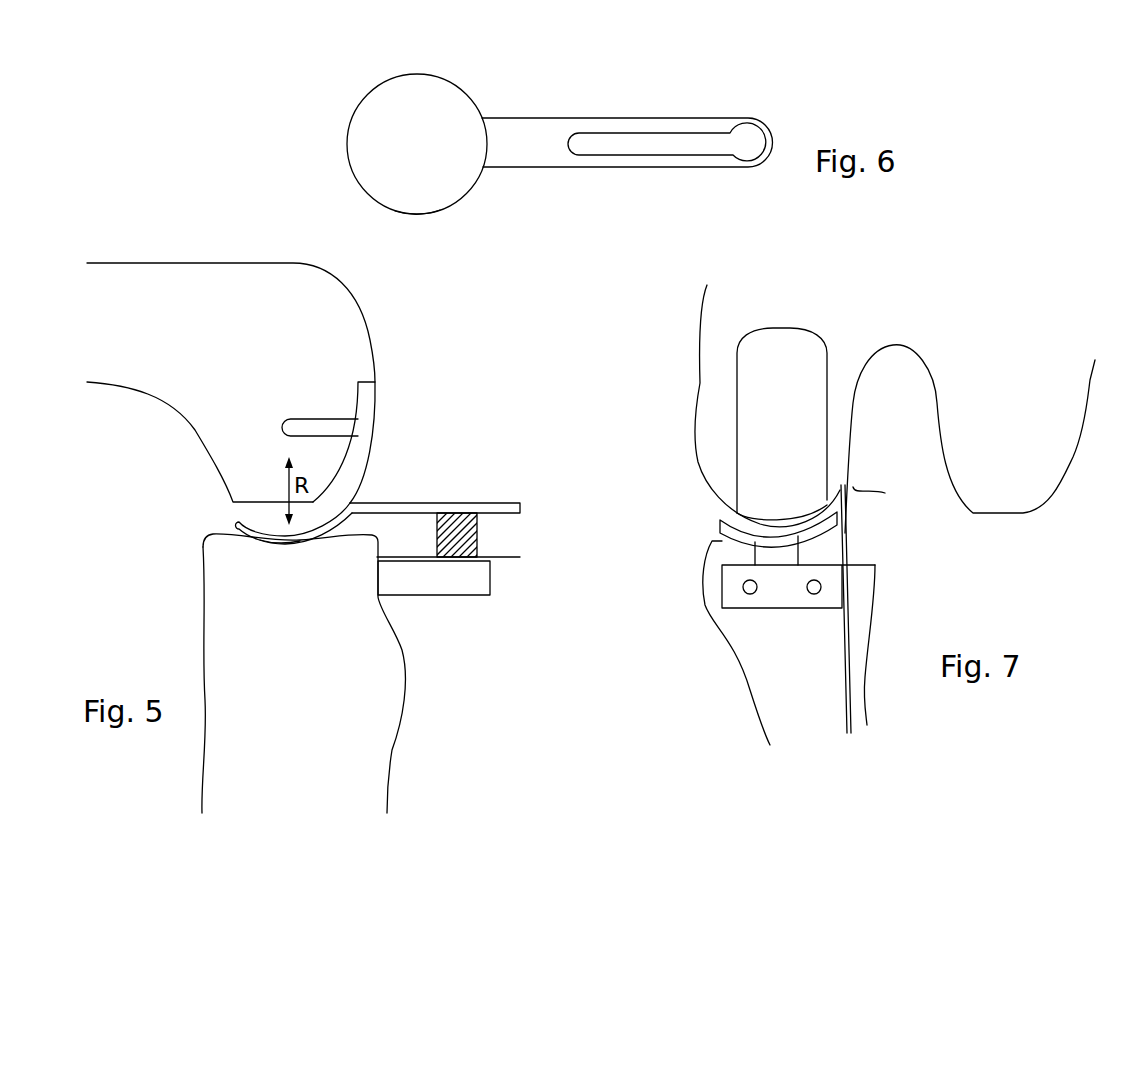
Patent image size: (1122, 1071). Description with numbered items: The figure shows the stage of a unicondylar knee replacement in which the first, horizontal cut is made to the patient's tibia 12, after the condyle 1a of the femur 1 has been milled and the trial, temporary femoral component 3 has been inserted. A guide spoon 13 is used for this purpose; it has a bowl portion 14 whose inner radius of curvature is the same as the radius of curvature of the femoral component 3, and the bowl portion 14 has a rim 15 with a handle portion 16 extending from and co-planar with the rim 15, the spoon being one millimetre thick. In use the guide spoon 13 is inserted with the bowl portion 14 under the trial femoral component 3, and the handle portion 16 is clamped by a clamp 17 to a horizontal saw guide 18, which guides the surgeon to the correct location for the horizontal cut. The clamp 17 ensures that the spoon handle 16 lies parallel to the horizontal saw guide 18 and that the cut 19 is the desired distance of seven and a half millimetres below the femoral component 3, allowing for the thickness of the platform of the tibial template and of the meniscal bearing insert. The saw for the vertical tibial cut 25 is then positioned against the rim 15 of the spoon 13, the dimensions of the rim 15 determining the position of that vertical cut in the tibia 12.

In FIG. 5, the femur 1 is at (245, 263).
In FIG. 7, the femur 1 is at (700, 365).
In FIG. 7, the condyle 1a is at (840, 417).
In FIG. 5, the femoral component 3 is at (378, 405).
In FIG. 5, the tibia 12 is at (390, 763).
In FIG. 7, the tibia 12 is at (760, 705).
In FIG. 6, the guide spoon 13 is at (535, 168).
In FIG. 5, the guide spoon 13 is at (455, 502).
In FIG. 7, the guide spoon 13 is at (720, 528).
In FIG. 6, the bowl portion 14 is at (448, 206).
In FIG. 5, the bowl portion 14 is at (291, 545).
In FIG. 6, the rim 15 is at (462, 88).
In FIG. 5, the rim 15 is at (348, 503).
In FIG. 6, the handle portion 16 is at (678, 169).
In FIG. 5, the clamp 17 is at (467, 535).
In FIG. 7, the clamp 17 is at (765, 557).
In FIG. 5, the horizontal saw guide 18 is at (490, 587).
In FIG. 7, the horizontal saw guide 18 is at (733, 597).
In FIG. 5, the cut 19 is at (407, 559).
In FIG. 7, the vertical tibial cut 25 is at (846, 486).